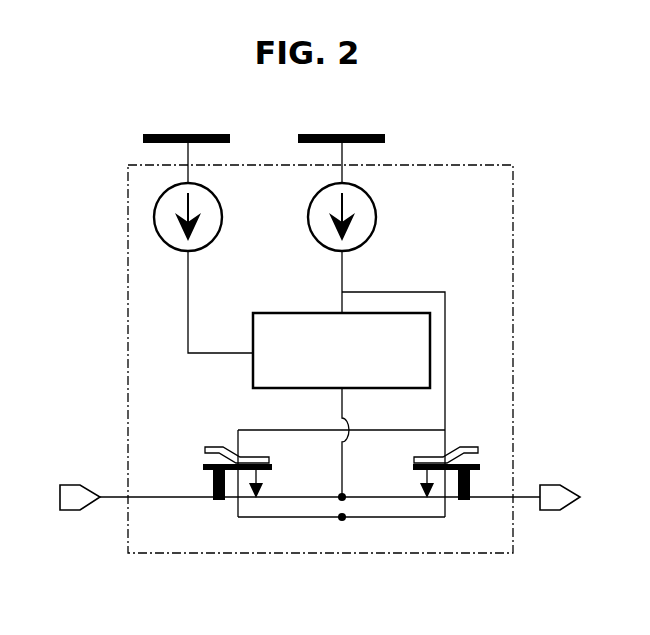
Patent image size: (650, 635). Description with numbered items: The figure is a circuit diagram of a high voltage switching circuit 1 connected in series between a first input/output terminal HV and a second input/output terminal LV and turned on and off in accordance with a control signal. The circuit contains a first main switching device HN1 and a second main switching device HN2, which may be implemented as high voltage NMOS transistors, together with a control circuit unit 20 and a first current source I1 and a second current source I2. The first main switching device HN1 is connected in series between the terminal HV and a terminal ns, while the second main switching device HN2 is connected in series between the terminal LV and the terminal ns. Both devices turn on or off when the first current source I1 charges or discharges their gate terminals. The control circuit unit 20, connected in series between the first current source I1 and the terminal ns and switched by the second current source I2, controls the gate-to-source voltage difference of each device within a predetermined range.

The high voltage switching circuit 1 is at (316, 375).
The control circuit unit 20 is at (431, 338).
The first main switching device HN1 is at (232, 460).
The second main switching device HN2 is at (451, 460).
The first current source I1 is at (350, 217).
The second current source I2 is at (196, 217).